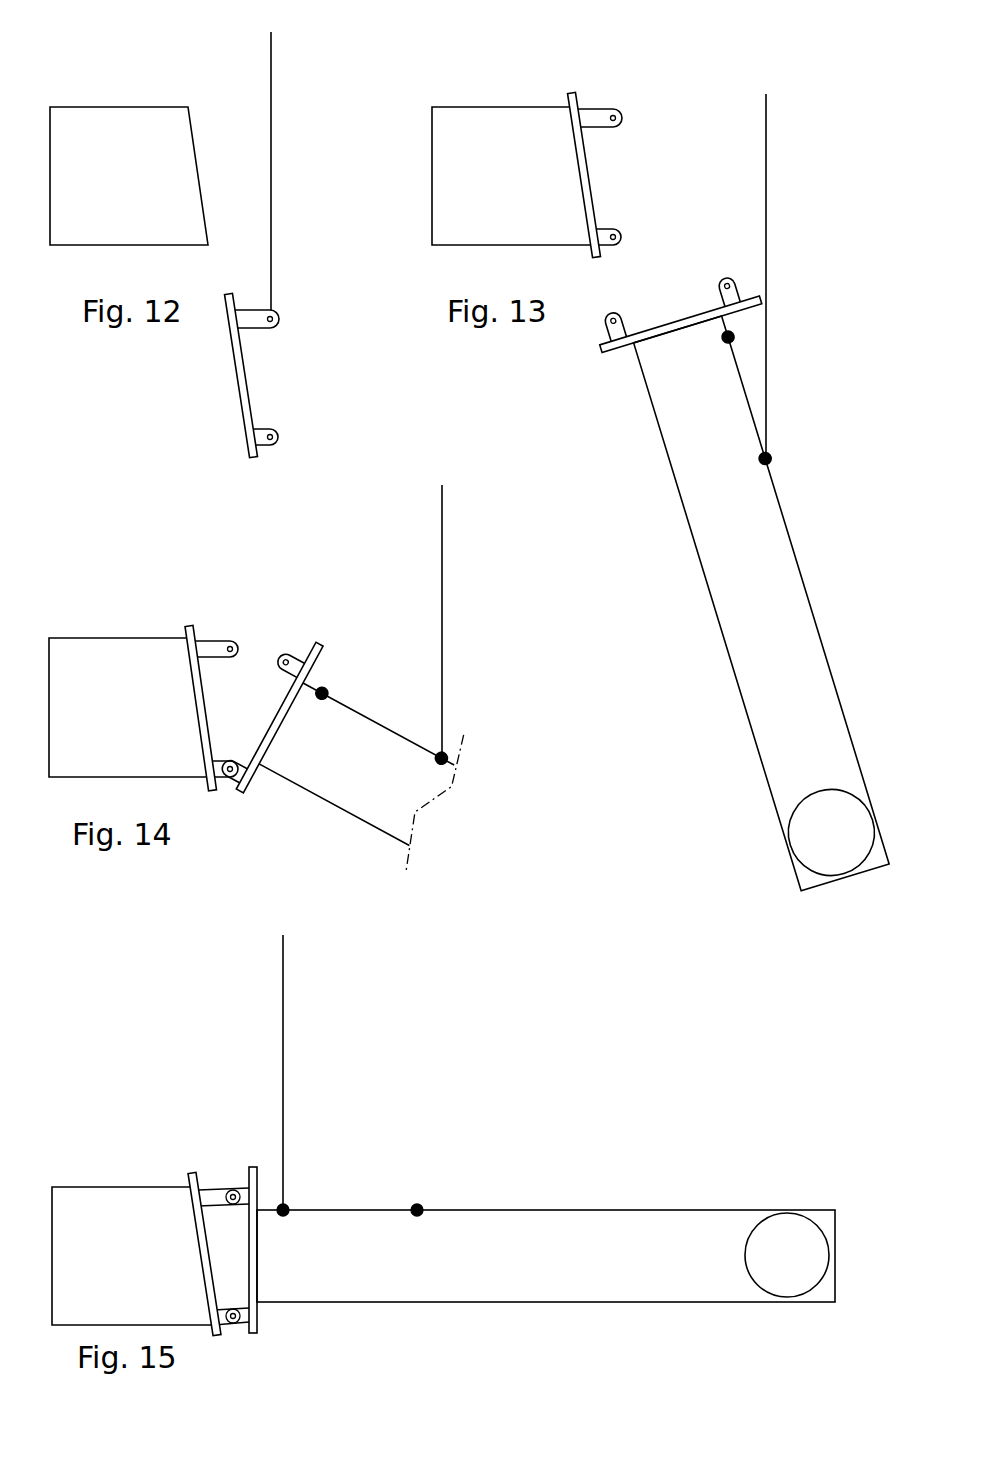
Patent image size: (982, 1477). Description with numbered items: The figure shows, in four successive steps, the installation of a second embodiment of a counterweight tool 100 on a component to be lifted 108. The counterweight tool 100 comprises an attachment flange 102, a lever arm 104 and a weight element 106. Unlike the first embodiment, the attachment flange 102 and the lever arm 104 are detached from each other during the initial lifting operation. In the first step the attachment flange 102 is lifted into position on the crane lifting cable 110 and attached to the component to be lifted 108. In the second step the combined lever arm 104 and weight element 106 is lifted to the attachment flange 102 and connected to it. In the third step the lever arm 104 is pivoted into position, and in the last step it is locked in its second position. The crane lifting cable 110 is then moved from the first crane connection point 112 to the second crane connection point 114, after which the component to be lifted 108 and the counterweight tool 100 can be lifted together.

In FIG. 15, the counterweight tool 100 is at (453, 1067).
In FIG. 15, the attachment flange 102 is at (197, 1177).
In FIG. 12, the lever arm 104 is at (249, 390).
In FIG. 13, the lever arm 104 is at (577, 98).
In FIG. 14, the lever arm 104 is at (356, 792).
In FIG. 15, the lever arm 104 is at (553, 1220).
In FIG. 13, the weight element 106 is at (837, 827).
In FIG. 15, the weight element 106 is at (810, 1248).
In FIG. 12, the component to be lifted 108 is at (117, 117).
In FIG. 13, the component to be lifted 108 is at (488, 142).
In FIG. 14, the component to be lifted 108 is at (90, 660).
In FIG. 15, the component to be lifted 108 is at (117, 1212).
In FIG. 12, the crane lifting cable 110 is at (271, 90).
In FIG. 13, the crane lifting cable 110 is at (766, 188).
In FIG. 14, the crane lifting cable 110 is at (442, 617).
In FIG. 15, the crane lifting cable 110 is at (283, 1077).
In FIG. 15, the first crane connection point 112 is at (420, 1203).
In FIG. 15, the second crane connection point 114 is at (287, 1207).